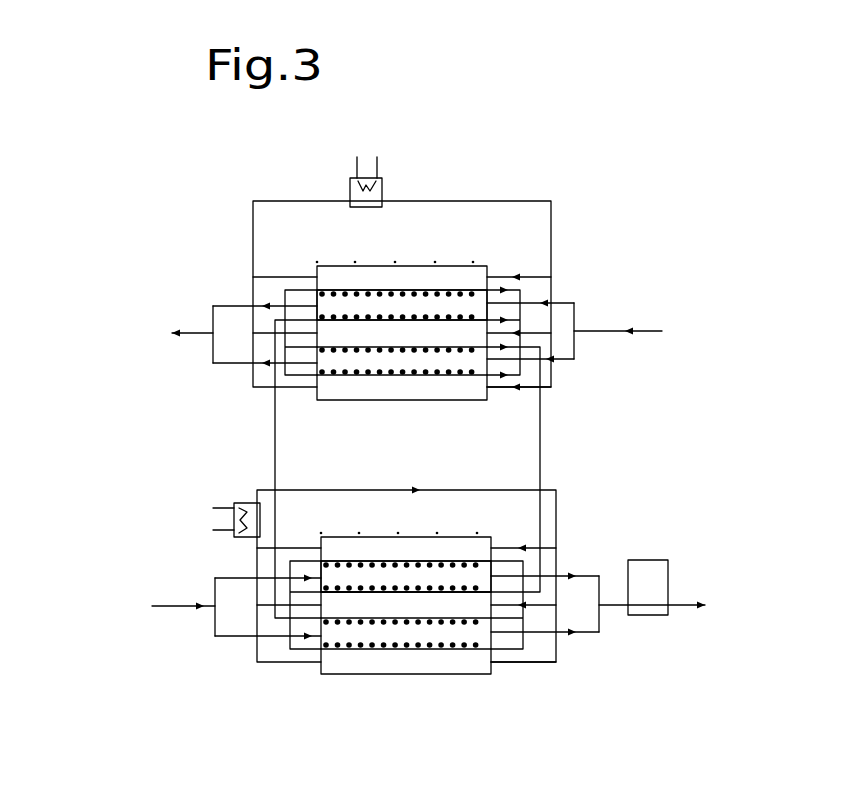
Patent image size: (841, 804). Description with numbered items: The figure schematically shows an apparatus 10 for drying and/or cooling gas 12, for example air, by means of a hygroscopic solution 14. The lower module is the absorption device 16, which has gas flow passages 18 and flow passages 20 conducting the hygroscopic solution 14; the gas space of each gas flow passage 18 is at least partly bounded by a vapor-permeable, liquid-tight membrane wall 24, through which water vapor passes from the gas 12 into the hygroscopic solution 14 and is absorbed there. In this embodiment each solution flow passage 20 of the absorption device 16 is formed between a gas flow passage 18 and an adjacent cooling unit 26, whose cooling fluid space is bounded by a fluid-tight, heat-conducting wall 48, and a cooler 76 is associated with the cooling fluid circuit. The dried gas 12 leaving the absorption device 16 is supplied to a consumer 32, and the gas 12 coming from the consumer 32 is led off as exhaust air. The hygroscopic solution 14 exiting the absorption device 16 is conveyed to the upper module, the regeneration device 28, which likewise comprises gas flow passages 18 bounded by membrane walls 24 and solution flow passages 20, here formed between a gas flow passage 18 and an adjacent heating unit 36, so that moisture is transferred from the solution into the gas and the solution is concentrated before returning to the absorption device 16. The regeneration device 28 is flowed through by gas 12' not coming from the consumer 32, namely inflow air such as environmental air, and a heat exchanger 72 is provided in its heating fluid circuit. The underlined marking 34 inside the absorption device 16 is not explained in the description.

The apparatus 10 is at (479, 121).
The gas 12 is at (434, 640).
The gas not coming from the consumer 12' is at (472, 356).
The hygroscopic solution 14 is at (275, 452).
The absorption device 16 is at (407, 682).
The gas flow passage 18 is at (390, 302).
The flow passage conducting the hygroscopic solution 20 is at (317, 291).
The membrane wall 24 is at (449, 318).
The cooling unit 26 is at (449, 609).
The regeneration device 28 is at (528, 169).
The consumer 32 is at (660, 573).
The heat exchanger layer 34 is at (404, 615).
The heating unit 36 is at (340, 272).
The fluid-tight, heat-conducting wall 48 is at (347, 594).
The heat exchanger 72 is at (383, 180).
The cooler 76 is at (235, 503).